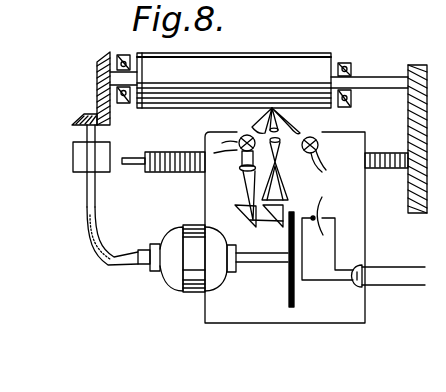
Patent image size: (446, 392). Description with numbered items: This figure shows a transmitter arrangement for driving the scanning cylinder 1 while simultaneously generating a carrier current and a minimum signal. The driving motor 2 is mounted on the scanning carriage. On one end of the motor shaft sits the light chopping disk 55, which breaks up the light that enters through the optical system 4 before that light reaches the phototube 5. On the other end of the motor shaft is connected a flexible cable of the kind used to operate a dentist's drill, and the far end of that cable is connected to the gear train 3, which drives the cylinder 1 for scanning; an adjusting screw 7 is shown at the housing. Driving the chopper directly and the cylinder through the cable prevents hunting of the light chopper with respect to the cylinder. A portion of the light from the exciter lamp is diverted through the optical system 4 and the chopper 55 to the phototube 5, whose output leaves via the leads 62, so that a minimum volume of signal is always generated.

The drum 1 is at (271, 58).
The driving motor 2 is at (168, 280).
The gear train 3 is at (97, 100).
The optical system 4 is at (291, 139).
The phototube 5 is at (322, 201).
The adjusting screw 7 is at (175, 152).
The light chopping disk 55 is at (289, 291).
The leads 62 is at (445, 3).